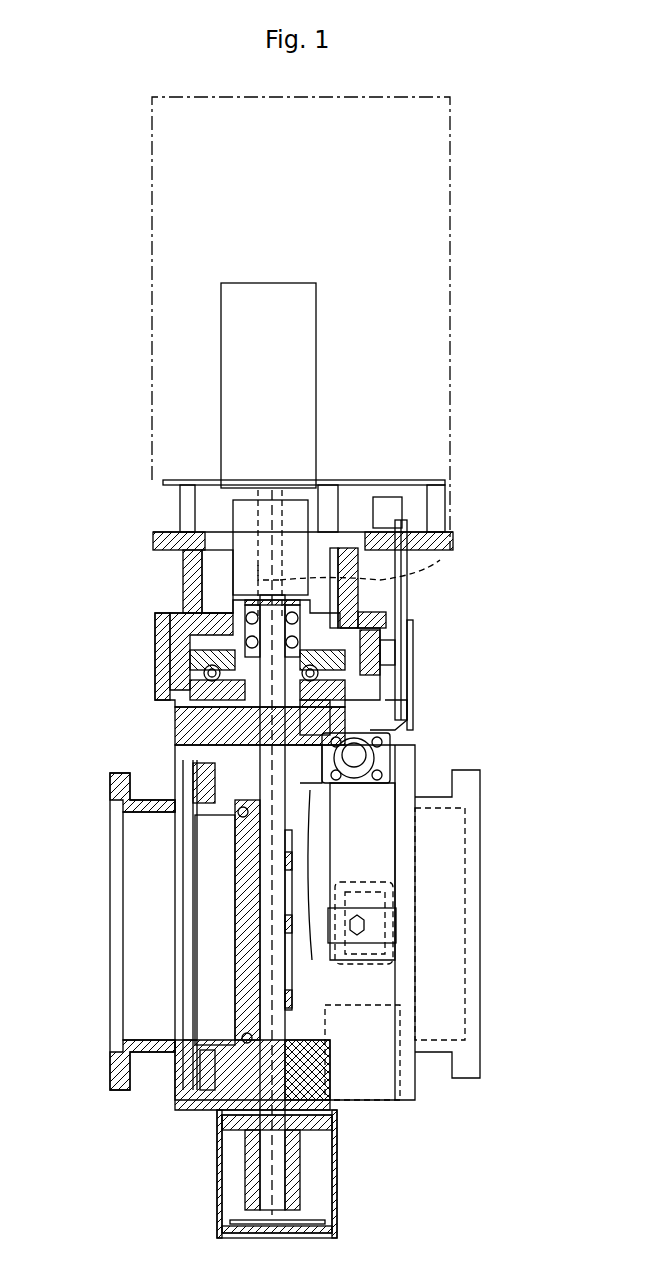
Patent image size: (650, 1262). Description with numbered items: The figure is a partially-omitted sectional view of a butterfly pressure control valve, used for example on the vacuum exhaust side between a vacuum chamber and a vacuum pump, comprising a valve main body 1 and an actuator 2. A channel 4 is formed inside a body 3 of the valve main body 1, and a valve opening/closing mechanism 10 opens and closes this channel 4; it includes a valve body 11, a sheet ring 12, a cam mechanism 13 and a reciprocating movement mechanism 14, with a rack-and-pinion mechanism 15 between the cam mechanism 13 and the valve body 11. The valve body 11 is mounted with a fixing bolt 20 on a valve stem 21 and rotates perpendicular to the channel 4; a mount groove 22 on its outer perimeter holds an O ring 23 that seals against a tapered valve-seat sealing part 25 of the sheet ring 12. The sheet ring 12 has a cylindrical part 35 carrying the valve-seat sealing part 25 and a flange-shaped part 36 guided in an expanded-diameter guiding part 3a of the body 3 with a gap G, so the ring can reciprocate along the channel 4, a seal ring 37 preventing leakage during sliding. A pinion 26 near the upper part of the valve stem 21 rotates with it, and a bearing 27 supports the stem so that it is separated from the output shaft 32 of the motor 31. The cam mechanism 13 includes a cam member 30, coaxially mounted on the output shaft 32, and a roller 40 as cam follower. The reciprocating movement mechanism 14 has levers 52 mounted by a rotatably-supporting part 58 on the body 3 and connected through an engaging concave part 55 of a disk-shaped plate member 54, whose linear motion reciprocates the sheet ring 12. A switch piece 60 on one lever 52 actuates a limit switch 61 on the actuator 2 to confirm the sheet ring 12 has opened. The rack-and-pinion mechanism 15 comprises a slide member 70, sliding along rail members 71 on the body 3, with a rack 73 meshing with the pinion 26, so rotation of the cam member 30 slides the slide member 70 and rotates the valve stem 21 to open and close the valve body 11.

The valve main body 1 is at (492, 845).
The actuator 2 is at (435, 400).
The body 3 is at (215, 1100).
The guiding part 3a is at (172, 765).
The channel 4 is at (135, 1015).
The valve opening/closing mechanism 10 is at (382, 660).
The valve body 11 is at (245, 895).
The sheet ring 12 is at (200, 1075).
The cam mechanism 13 is at (175, 645).
The reciprocating movement mechanism 14 is at (395, 640).
The rack-and-pinion mechanism 15 is at (200, 674).
The fixing bolt 20 is at (300, 990).
The valve stem 21 is at (290, 1062).
The mount groove 22 is at (240, 845).
The O ring 23 is at (244, 1032).
The valve-seat sealing part 25 is at (335, 798).
The pinion 26 is at (400, 705).
The bearing 27 is at (250, 625).
The cam member 30 is at (190, 625).
The motor 31 is at (240, 338).
The output shaft 32 is at (440, 560).
The cylindrical part 35 is at (255, 1120).
The flange-shaped part 36 is at (190, 785).
The seal ring 37 is at (222, 1118).
The roller 40 is at (412, 652).
The lever 52 is at (365, 862).
The plate member 54 is at (400, 1020).
The engaging concave part 55 is at (385, 918).
The rotatably-supporting part 58 is at (392, 758).
The switch piece 60 is at (400, 605).
The limit switch 61 is at (395, 508).
The slide member 70 is at (195, 660).
The rail member 71 is at (335, 690).
The rack 73 is at (205, 688).
The gap G is at (200, 1100).